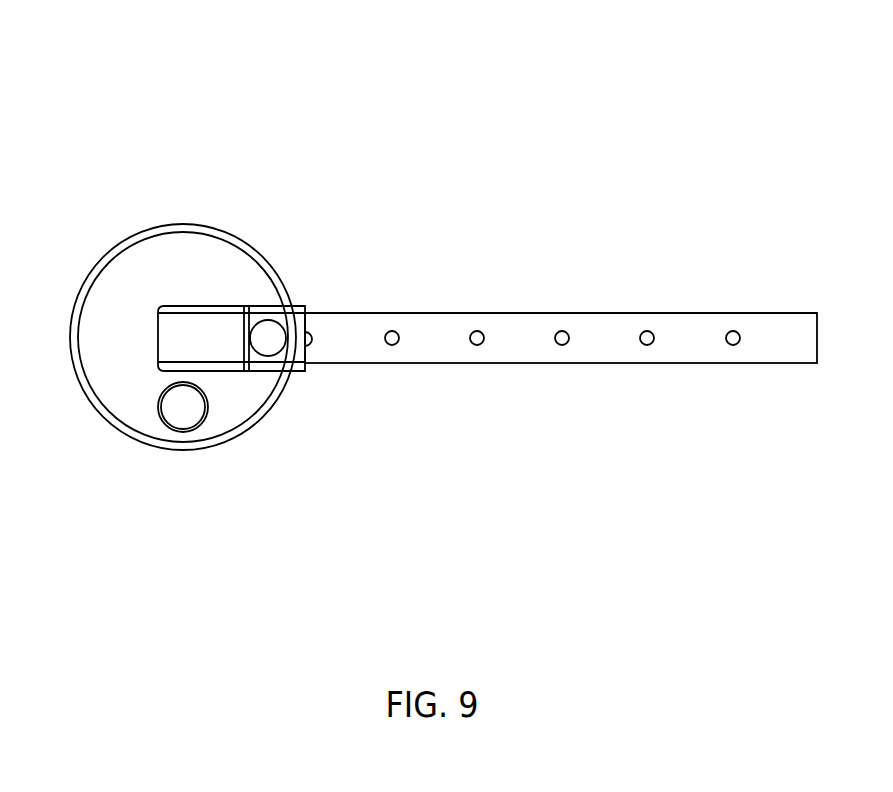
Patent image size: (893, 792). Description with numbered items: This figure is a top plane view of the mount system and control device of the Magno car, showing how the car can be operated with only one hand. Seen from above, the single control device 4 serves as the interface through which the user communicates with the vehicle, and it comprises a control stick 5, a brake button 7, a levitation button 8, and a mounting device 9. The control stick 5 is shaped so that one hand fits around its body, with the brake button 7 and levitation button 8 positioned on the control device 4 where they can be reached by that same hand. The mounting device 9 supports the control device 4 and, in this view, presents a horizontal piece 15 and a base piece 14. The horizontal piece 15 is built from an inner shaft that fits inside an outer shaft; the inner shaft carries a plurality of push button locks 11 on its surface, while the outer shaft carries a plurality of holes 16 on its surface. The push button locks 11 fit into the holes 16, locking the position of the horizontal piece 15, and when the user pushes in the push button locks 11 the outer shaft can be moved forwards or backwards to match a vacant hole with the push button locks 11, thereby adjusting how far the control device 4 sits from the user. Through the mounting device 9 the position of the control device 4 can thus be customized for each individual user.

The control device 4 is at (227, 158).
The base piece 14 is at (133, 262).
The control stick 5 is at (182, 343).
The brake button 7 is at (266, 337).
The levitation button 8 is at (186, 398).
The mounting device 9 is at (489, 284).
The horizontal piece 15 is at (593, 313).
The holes 16 is at (312, 341).
The push button locks 11 is at (737, 344).